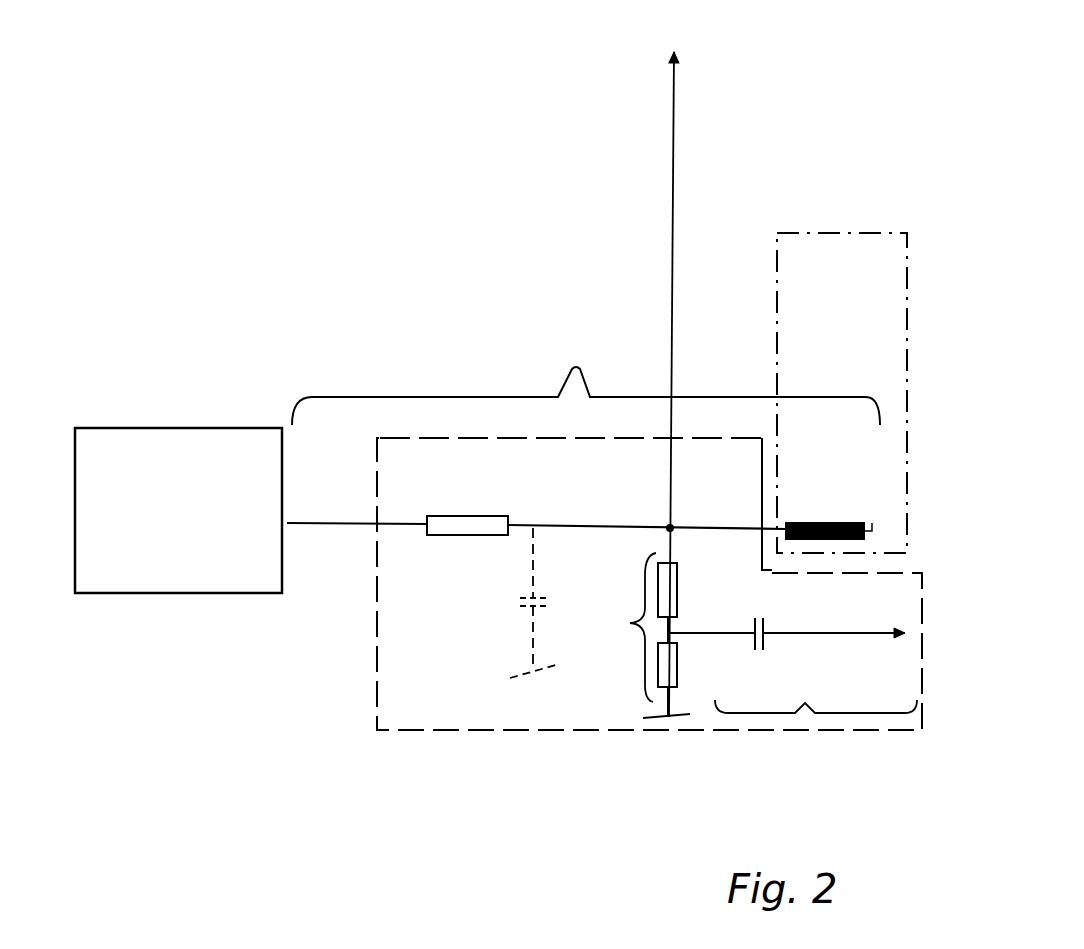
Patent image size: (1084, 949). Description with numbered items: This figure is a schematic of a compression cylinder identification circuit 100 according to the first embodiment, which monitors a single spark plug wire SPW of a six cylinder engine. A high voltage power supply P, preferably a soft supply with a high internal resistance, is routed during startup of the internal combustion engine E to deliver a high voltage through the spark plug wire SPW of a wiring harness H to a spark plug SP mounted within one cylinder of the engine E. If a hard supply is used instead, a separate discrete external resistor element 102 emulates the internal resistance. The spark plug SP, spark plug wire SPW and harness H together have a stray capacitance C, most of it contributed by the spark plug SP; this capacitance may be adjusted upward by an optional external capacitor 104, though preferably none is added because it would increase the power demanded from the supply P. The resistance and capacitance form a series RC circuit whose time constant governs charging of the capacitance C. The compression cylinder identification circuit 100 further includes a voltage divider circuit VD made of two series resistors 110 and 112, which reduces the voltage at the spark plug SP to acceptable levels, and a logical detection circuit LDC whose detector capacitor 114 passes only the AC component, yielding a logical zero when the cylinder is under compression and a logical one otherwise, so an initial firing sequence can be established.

The compression cylinder identification circuit 100 is at (497, 732).
The external resistor element 102 is at (445, 516).
The external capacitor 104 is at (528, 605).
The resistor 110 is at (673, 583).
The resistor 112 is at (667, 672).
The detector capacitor 114 is at (767, 633).
The high voltage power supply P is at (135, 607).
The wiring harness H is at (600, 527).
The stray capacitance C is at (586, 378).
The internal combustion engine E is at (762, 260).
The spark plug SP is at (824, 393).
The spark plug wire SPW is at (745, 524).
The voltage divider circuit VD is at (628, 624).
The logical detection circuit LDC is at (805, 718).